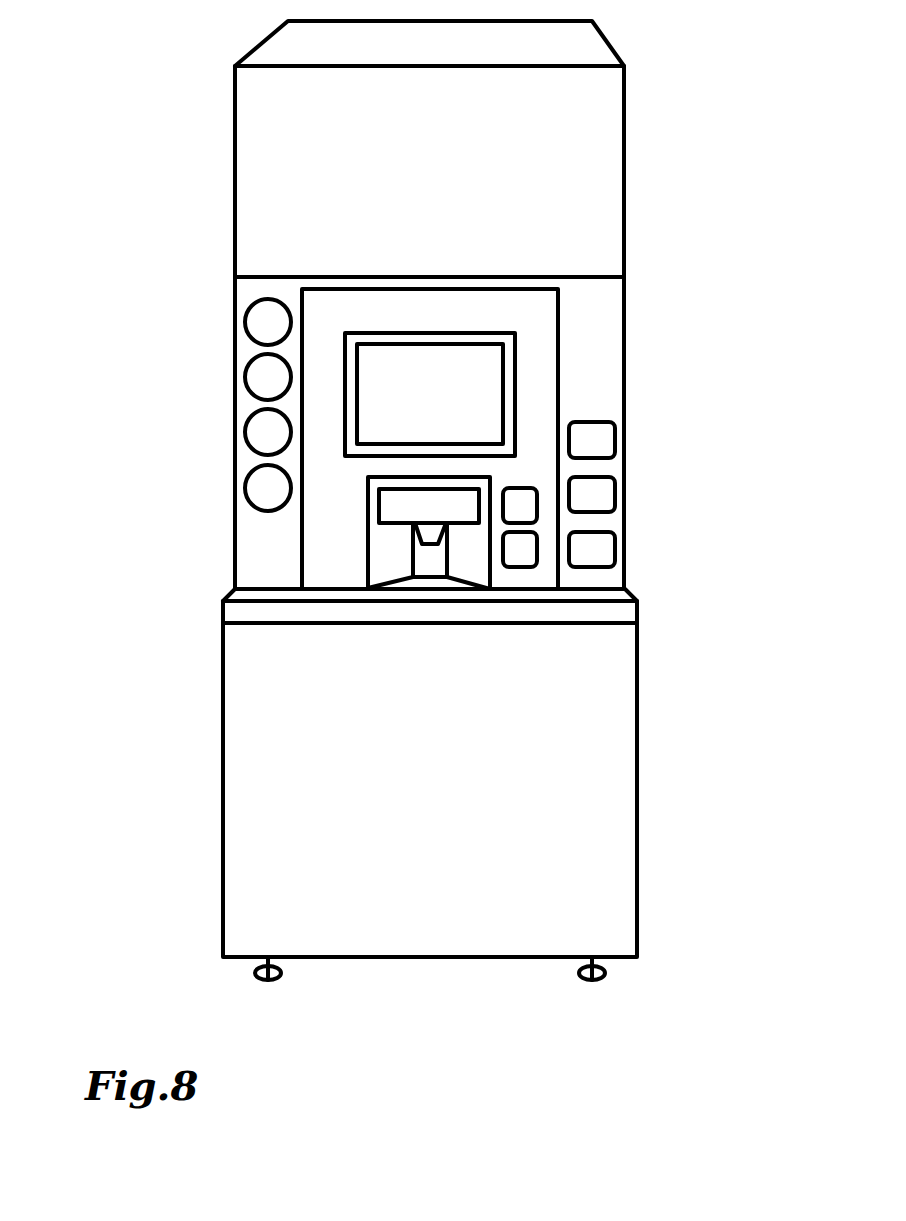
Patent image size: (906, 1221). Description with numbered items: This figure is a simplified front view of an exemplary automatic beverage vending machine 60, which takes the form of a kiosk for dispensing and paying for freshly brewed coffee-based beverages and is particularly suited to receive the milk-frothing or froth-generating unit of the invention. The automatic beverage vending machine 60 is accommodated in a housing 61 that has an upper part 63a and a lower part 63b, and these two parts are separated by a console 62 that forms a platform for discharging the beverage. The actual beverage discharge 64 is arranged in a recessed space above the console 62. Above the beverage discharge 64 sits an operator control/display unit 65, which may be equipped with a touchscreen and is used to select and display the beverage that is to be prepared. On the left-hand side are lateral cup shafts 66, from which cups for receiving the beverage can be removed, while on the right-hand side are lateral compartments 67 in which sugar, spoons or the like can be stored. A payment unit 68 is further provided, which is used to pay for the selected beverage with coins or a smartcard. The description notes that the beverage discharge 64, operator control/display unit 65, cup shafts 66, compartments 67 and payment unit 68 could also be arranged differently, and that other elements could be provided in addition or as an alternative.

The automatic beverage vending machine 60 is at (145, 670).
The housing 61 is at (637, 892).
The console 62 is at (617, 612).
The upper part 63a is at (603, 210).
The lower part 63b is at (602, 768).
The beverage discharge 64 is at (392, 534).
The operator control/display unit 65 is at (503, 388).
The lateral cup shafts 66 is at (250, 322).
The lateral compartments 67 is at (592, 500).
The payment unit 68 is at (522, 545).